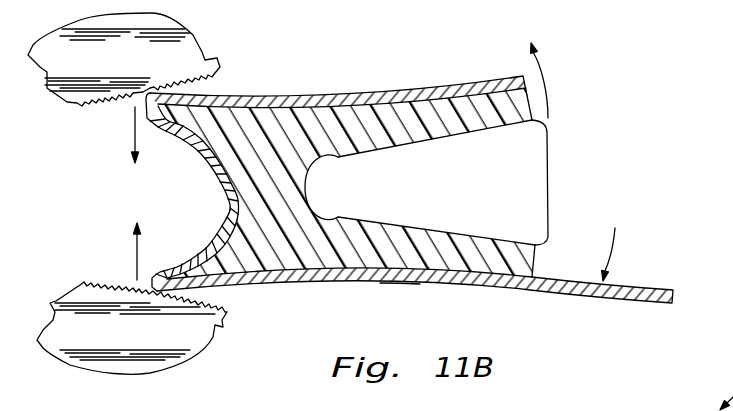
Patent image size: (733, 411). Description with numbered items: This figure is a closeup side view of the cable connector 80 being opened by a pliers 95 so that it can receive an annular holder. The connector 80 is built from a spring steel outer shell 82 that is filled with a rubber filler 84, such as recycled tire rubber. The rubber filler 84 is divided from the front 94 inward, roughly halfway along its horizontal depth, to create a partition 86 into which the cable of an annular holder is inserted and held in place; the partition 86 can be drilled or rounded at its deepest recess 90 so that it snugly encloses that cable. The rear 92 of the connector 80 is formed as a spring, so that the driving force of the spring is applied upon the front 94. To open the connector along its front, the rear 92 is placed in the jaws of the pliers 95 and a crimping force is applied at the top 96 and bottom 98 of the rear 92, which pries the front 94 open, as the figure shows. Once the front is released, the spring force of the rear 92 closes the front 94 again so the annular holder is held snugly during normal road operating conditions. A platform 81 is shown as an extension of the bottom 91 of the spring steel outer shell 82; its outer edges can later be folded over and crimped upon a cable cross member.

The cable connector 80 is at (409, 184).
The platform 81 is at (618, 300).
The spring steel outer shell 82 is at (448, 84).
The rubber filler 84 is at (257, 127).
The partition 86 is at (550, 183).
The deepest recess 90 is at (320, 172).
The bottom 91 is at (388, 283).
The rear 92 is at (162, 192).
The front 94 is at (562, 199).
The pliers 95 is at (122, 69).
The top 96 is at (217, 83).
The bottom 98 is at (236, 294).